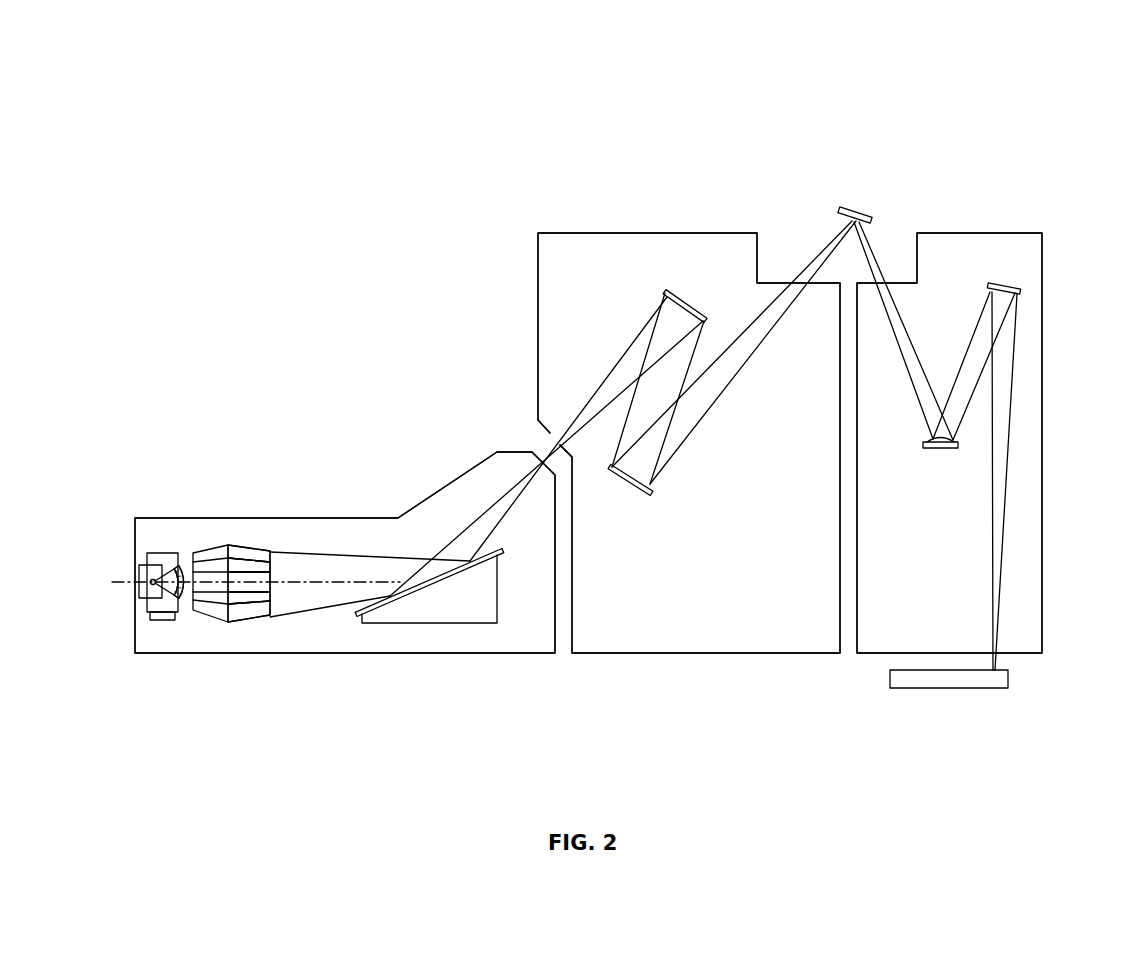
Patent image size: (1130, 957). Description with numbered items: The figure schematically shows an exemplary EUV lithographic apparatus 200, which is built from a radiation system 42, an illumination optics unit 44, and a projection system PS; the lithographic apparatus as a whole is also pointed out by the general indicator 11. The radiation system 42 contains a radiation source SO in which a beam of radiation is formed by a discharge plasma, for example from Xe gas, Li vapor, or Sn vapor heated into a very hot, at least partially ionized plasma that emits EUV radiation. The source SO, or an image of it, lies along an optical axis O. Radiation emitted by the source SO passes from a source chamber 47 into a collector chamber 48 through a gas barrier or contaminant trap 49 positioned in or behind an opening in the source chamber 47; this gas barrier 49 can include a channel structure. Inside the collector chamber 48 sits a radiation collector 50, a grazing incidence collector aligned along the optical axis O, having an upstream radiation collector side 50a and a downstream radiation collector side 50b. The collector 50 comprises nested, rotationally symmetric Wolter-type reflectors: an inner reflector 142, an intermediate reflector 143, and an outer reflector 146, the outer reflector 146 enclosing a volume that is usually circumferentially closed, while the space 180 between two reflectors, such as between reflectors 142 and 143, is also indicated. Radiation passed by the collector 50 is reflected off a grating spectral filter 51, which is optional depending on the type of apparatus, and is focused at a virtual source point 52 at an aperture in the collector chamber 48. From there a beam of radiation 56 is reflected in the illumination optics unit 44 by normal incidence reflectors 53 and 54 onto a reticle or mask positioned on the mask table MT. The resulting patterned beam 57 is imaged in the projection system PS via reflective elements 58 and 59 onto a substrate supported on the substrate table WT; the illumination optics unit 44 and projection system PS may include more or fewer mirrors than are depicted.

The EUV lithographic apparatus 200 is at (965, 108).
The illumination system 11 is at (537, 335).
The radiation system 42 is at (457, 479).
The illumination optics unit 44 is at (568, 270).
The source chamber 47 is at (158, 556).
The radiation source SO is at (140, 566).
The optical axis O is at (112, 583).
The gas barrier or contaminant trap 49 is at (182, 593).
The radiation collector 50 is at (232, 546).
The upstream radiation collector side 50a is at (187, 598).
The downstream radiation collector side 50b is at (268, 598).
The outer reflector 146 is at (253, 550).
The intermediate reflector 143 is at (273, 558).
The inner reflector 142 is at (270, 557).
The space between two reflectors 180 is at (241, 603).
The collector chamber 48 is at (262, 640).
The grating spectral filter 51 is at (433, 610).
The virtual source point 52 is at (548, 447).
The normal incidence reflector 53 is at (700, 305).
The normal incidence reflector 54 is at (623, 481).
The beam of radiation 56 is at (695, 410).
The mask table MT is at (858, 208).
The patterned beam 57 is at (904, 348).
The reflective element 58 is at (942, 449).
The reflective element 59 is at (1007, 284).
The projection system PS is at (1044, 380).
The substrate table WT is at (932, 688).